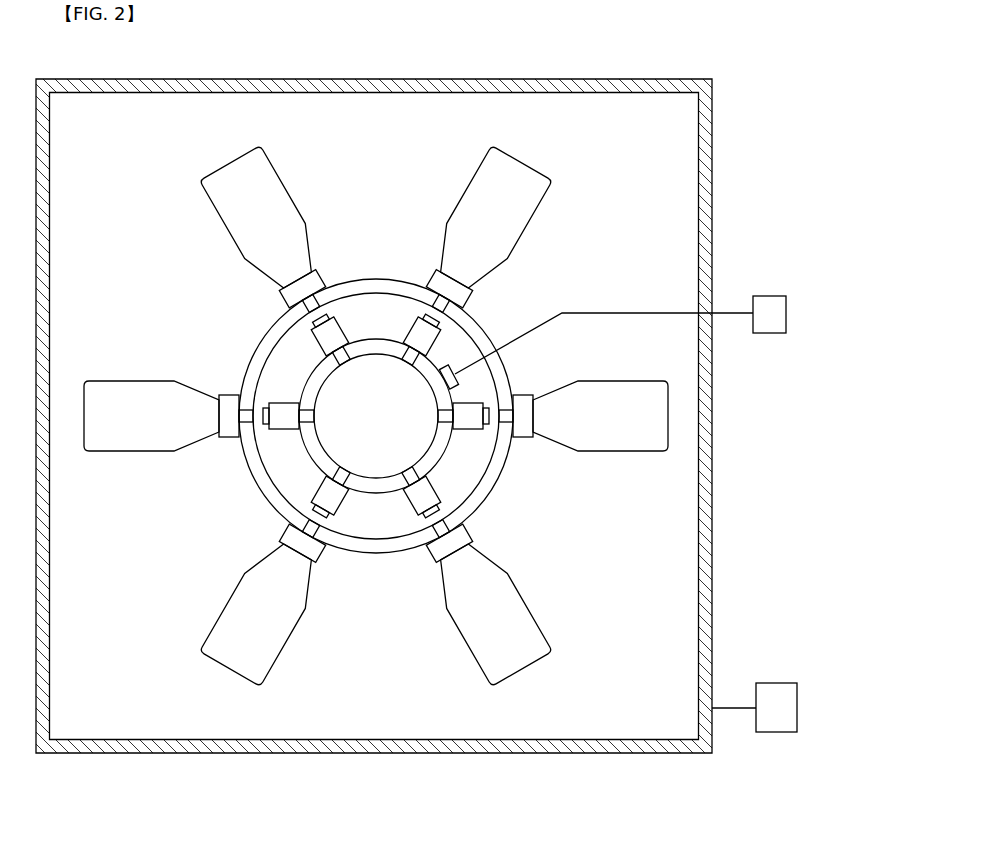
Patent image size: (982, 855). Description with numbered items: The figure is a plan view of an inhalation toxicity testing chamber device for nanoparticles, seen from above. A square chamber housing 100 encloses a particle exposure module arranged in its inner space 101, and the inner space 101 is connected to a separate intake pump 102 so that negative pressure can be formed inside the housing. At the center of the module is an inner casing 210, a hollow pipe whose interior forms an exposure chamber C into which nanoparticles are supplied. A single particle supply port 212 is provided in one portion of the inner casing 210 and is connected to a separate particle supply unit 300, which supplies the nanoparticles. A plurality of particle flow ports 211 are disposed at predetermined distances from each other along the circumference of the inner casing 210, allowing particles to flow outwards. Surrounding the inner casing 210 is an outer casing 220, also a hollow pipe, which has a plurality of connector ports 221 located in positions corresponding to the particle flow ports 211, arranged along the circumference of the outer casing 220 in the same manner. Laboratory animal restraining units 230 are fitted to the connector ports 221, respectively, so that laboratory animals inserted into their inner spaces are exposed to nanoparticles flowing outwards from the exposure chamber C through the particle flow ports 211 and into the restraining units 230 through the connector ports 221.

The chamber housing 100 is at (498, 753).
The inner space 101 is at (356, 727).
The intake pump 102 is at (767, 733).
The particle supply unit 300 is at (780, 294).
The inner casing 210 is at (378, 339).
The particle flow port 211 is at (313, 337).
The particle supply port 212 is at (460, 354).
The outer casing 220 is at (343, 278).
The connector port 221 is at (282, 288).
The laboratory animal restraining unit 230 is at (262, 147).
The exposure chamber C is at (367, 447).